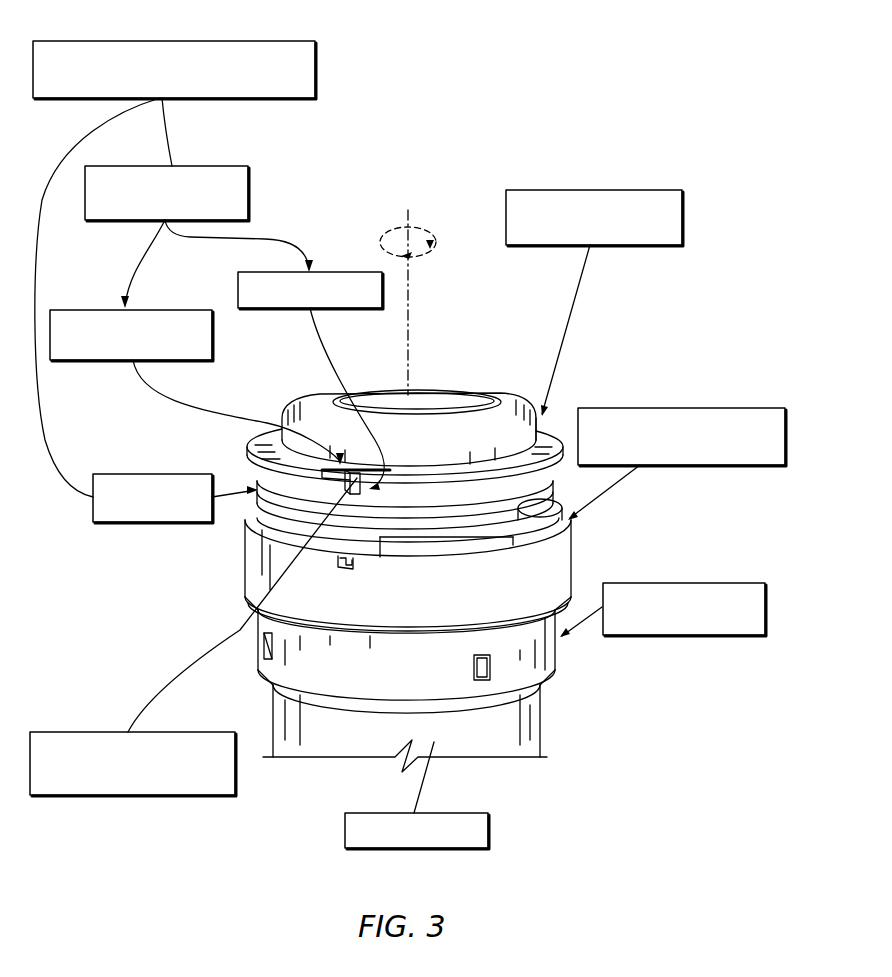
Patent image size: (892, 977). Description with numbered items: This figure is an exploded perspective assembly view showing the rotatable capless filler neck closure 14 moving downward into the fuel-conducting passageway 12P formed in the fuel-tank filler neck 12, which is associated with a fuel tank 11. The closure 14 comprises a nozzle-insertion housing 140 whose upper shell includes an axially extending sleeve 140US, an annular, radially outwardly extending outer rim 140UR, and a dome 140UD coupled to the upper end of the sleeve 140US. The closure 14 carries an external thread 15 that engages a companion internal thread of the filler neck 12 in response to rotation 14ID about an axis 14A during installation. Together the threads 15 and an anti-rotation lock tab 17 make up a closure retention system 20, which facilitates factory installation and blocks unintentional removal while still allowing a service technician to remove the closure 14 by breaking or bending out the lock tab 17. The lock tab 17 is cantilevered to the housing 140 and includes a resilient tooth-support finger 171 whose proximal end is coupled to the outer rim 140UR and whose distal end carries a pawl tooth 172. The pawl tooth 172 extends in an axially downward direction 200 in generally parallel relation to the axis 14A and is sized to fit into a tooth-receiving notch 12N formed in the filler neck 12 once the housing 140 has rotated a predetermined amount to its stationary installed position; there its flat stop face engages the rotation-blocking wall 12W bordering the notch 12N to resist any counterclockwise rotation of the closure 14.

The closure retention system 20 is at (78, 41).
The anti-rotation lock tab 17 is at (130, 166).
The resilient tooth-support finger 171 is at (105, 310).
The pawl tooth 172 is at (293, 272).
The capless filler neck closure 14 is at (550, 190).
The rotation 14ID is at (425, 215).
The axis 14A is at (410, 270).
The nozzle-insertion housing 140 is at (527, 405).
The dome 140UD is at (500, 407).
The outer rim 140UR is at (549, 414).
The axially extending sleeve 140US is at (475, 527).
The fuel-conducting passageway 12P is at (634, 408).
The fuel-tank filler neck 12 is at (648, 583).
The rotation-blocking wall 12W is at (353, 567).
The axially downward direction 200 is at (344, 596).
The tooth-receiving notch 12N is at (88, 732).
The external thread 15 is at (185, 474).
The fuel tank 11 is at (388, 813).